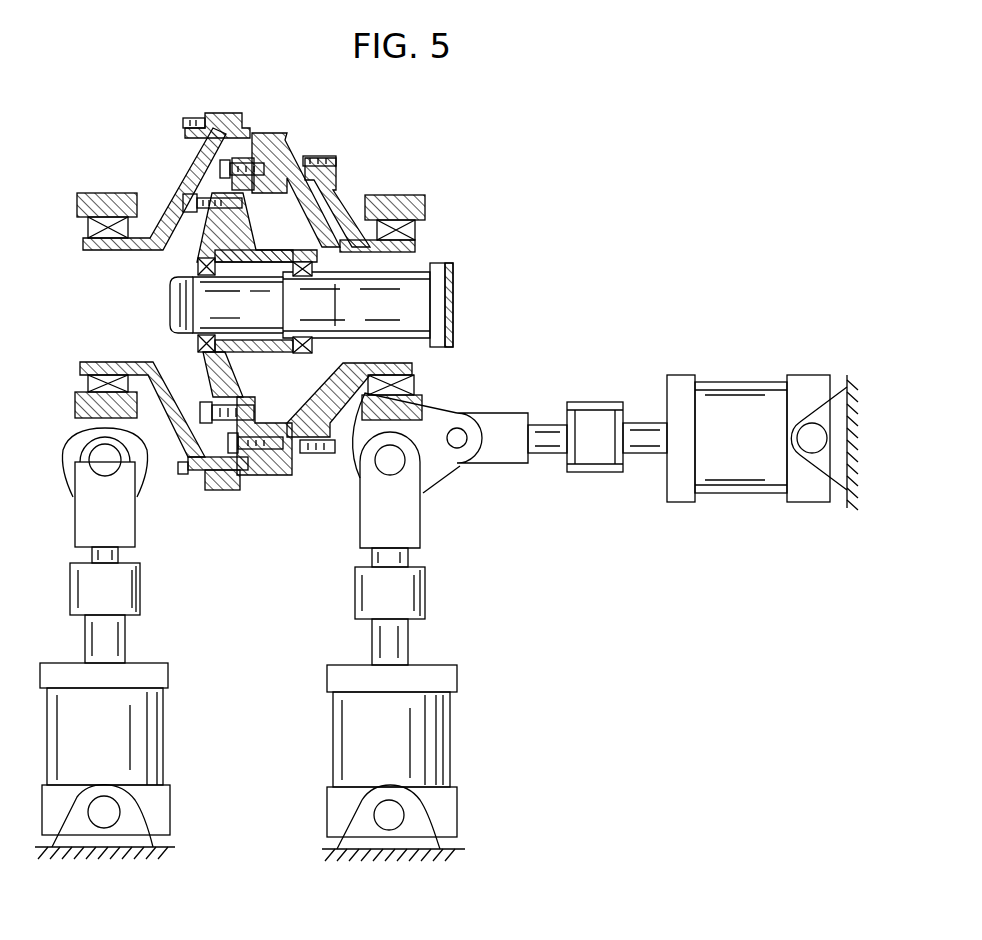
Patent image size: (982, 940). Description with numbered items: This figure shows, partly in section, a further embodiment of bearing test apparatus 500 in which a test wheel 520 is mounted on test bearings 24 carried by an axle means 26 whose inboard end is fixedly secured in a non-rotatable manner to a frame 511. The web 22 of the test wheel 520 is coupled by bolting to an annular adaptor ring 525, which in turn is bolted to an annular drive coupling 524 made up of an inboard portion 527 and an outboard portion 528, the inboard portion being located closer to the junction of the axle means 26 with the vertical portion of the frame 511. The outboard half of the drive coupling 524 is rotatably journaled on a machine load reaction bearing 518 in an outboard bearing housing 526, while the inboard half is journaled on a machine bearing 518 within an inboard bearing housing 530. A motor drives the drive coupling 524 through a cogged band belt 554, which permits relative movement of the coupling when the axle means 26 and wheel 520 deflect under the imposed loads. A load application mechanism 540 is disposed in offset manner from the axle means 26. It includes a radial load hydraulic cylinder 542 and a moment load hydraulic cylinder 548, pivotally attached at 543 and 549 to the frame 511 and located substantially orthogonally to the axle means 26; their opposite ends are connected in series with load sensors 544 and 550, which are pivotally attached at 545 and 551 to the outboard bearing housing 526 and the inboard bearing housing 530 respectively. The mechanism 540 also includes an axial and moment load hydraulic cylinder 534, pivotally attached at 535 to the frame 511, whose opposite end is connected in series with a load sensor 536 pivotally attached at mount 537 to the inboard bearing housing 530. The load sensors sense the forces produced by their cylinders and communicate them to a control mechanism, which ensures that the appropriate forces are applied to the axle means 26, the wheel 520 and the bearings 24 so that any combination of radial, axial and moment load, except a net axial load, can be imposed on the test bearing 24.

The test apparatus 500 is at (488, 143).
The frame 511 is at (458, 316).
The machine load reaction bearing 518 is at (415, 228).
The test wheel 520 is at (200, 239).
The web 22 is at (238, 240).
The test bearing 24 is at (310, 282).
The axle means 26 is at (410, 272).
The annular drive coupling 524 is at (252, 122).
The annular adaptor ring 525 is at (237, 187).
The outboard bearing housing 526 is at (104, 192).
The inboard portion of drive coupling 527 is at (340, 198).
The outboard portion of drive coupling 528 is at (173, 197).
The inboard bearing housing 530 is at (410, 195).
The hydraulic load cylinder 534 is at (723, 483).
The pivotal attachment 535 is at (811, 448).
The load sensor 536 is at (598, 470).
The mount 537 is at (460, 432).
The load application mechanism 540 is at (530, 648).
The radial load hydraulic cylinder 542 is at (150, 748).
The pivotal attachment 543 is at (108, 812).
The load sensor 544 is at (128, 598).
The pivotal attachment 545 is at (112, 468).
The moment load hydraulic cylinder 548 is at (445, 742).
The pivotal attachment 549 is at (398, 815).
The load sensor 550 is at (418, 600).
The pivotal attachment 551 is at (384, 462).
The cogged band belt 554 is at (318, 157).